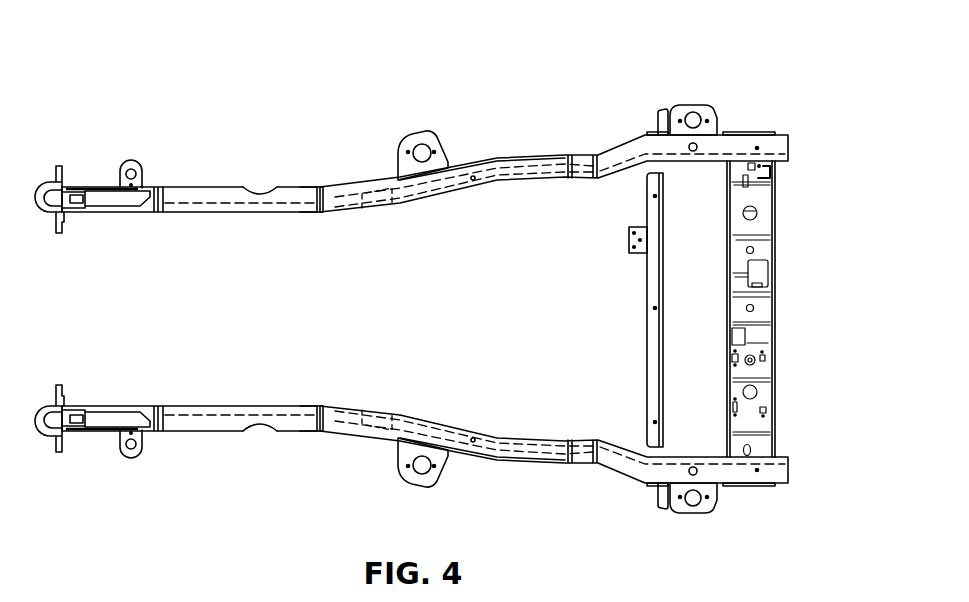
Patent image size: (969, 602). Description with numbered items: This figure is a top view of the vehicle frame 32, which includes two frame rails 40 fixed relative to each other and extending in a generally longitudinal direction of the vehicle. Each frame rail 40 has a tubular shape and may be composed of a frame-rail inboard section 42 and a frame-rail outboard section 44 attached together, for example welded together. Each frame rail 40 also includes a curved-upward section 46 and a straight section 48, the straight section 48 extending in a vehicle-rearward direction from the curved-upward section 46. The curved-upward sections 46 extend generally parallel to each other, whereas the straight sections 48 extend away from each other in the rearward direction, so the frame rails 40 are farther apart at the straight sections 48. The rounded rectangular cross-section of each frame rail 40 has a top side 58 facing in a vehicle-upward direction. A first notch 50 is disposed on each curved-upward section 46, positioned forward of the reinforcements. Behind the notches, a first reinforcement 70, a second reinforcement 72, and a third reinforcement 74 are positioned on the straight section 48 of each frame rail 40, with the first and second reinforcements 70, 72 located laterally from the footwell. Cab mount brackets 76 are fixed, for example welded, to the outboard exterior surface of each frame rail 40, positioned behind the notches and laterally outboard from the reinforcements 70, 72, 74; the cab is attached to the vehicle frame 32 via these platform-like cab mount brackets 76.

The vehicle frame 32 is at (121, 112).
The frame rail 40 is at (292, 178).
The frame-rail inboard section 42 is at (312, 213).
The frame-rail outboard section 44 is at (307, 185).
The curved-upward section 46 is at (223, 187).
The straight section 48 is at (493, 157).
The first notch 50 is at (320, 207).
The top side 58 is at (177, 186).
The first reinforcement 70 is at (548, 155).
The second reinforcement 72 is at (507, 186).
The third reinforcement 74 is at (362, 207).
The cab mount bracket 76 is at (421, 133).